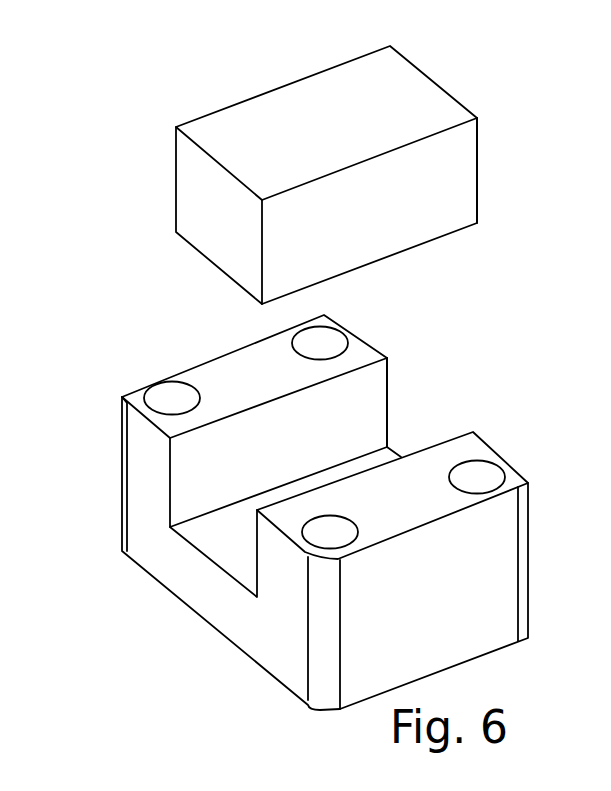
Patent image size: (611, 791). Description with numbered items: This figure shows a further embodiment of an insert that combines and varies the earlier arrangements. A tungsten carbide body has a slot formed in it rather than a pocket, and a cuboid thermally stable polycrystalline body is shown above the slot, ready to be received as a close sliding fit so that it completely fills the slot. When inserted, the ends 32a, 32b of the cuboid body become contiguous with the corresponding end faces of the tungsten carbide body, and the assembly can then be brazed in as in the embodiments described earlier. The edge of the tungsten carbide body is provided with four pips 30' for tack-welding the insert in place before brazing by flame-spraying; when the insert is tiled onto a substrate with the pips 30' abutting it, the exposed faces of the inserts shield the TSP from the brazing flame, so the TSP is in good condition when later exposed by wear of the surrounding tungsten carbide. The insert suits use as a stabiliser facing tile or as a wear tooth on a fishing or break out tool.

The end of TSP body 32a is at (203, 199).
The end of TSP body 32b is at (479, 187).
The pips 30' is at (324, 412).